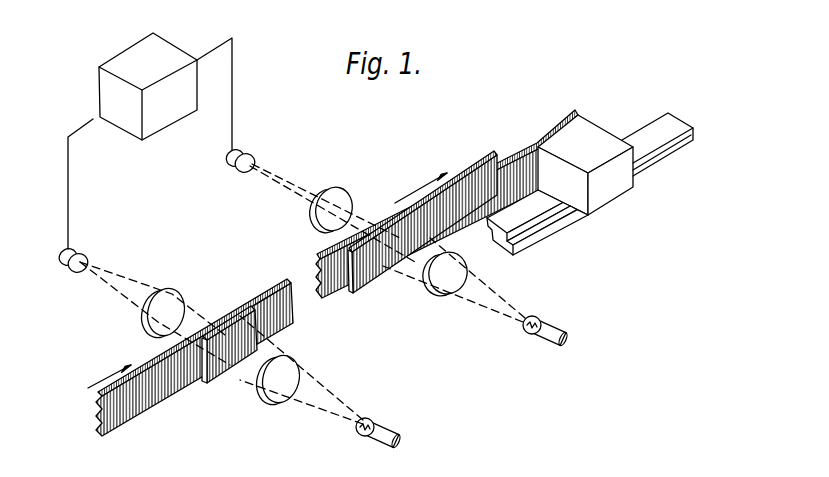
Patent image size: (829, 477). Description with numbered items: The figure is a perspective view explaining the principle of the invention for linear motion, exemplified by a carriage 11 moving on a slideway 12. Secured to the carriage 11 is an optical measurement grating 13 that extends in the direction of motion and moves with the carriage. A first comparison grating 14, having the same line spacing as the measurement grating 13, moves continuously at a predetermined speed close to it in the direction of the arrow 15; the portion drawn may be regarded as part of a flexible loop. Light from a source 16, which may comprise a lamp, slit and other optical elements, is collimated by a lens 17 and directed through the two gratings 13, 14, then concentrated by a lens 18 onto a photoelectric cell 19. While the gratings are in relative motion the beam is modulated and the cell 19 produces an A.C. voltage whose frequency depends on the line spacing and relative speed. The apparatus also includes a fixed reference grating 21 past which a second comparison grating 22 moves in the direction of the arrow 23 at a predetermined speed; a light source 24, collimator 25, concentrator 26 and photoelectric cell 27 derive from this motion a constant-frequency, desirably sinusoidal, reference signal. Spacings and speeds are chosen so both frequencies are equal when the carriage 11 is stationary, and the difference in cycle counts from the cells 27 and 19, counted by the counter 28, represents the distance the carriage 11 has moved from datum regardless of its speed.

The carriage 11 is at (605, 205).
The slideway 12 is at (638, 167).
The optical measurement grating 13 is at (522, 145).
The first comparison grating 14 is at (470, 167).
The arrow 15 is at (404, 195).
The light source 16 is at (540, 318).
The lens 17 is at (445, 294).
The lens 18 is at (345, 196).
The photoelectric cell 19 is at (249, 160).
The fixed reference grating 21 is at (218, 378).
The second comparison grating 22 is at (270, 298).
The arrow 23 is at (109, 370).
The light source 24 is at (373, 422).
The collimator 25 is at (299, 372).
The concentrator 26 is at (182, 294).
The photoelectric cell 27 is at (83, 261).
The counter 28 is at (204, 25).